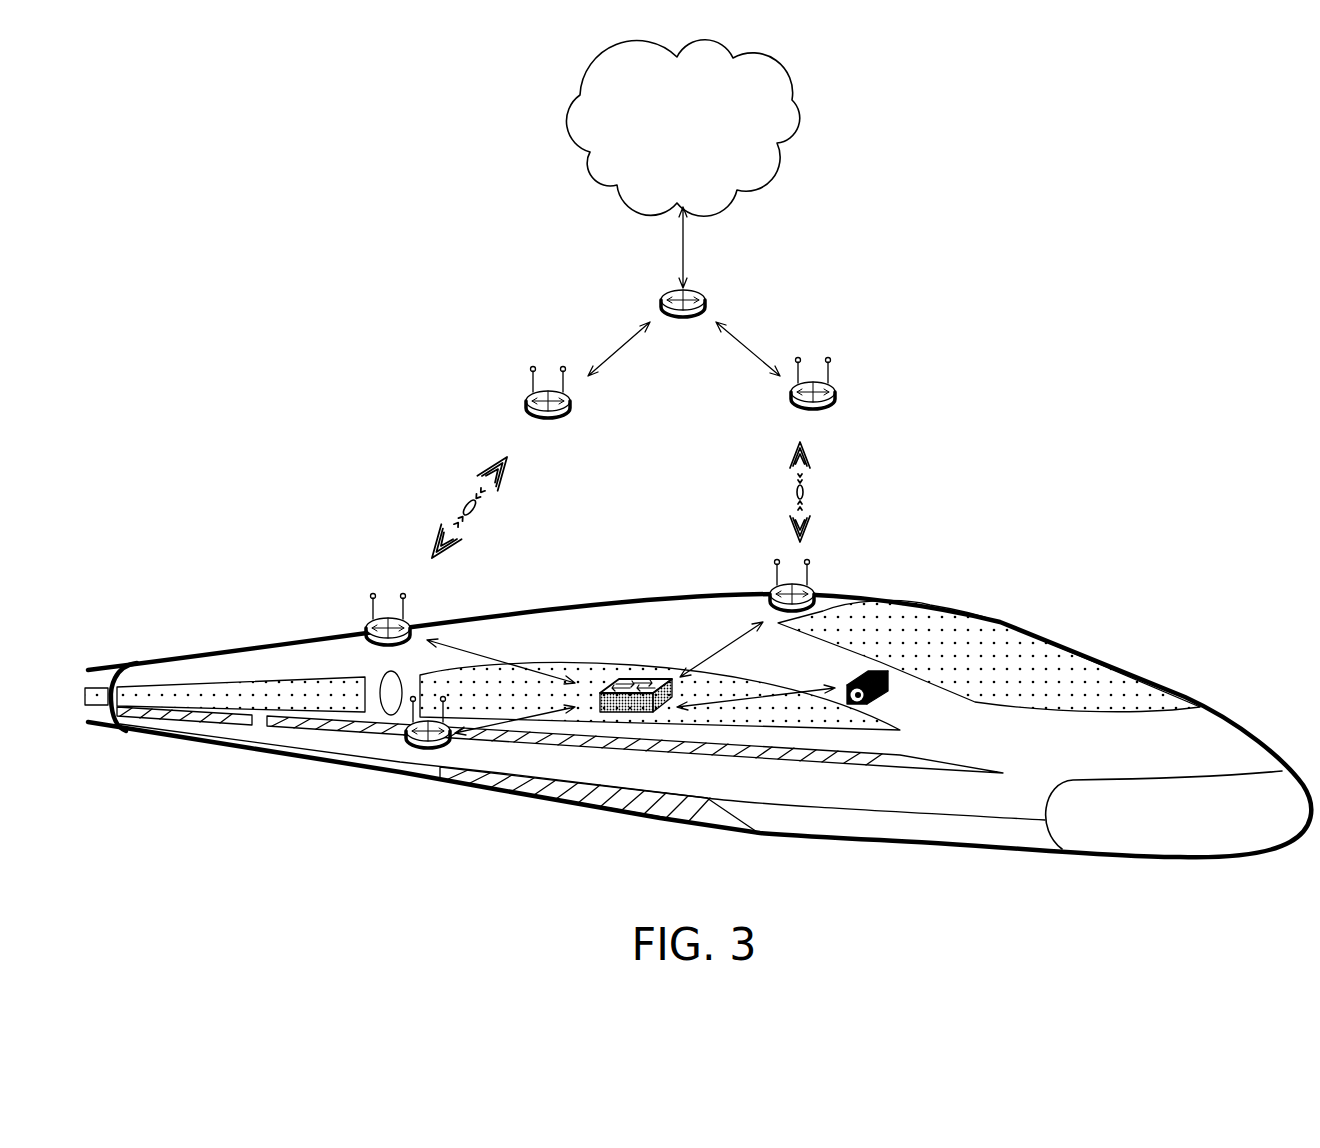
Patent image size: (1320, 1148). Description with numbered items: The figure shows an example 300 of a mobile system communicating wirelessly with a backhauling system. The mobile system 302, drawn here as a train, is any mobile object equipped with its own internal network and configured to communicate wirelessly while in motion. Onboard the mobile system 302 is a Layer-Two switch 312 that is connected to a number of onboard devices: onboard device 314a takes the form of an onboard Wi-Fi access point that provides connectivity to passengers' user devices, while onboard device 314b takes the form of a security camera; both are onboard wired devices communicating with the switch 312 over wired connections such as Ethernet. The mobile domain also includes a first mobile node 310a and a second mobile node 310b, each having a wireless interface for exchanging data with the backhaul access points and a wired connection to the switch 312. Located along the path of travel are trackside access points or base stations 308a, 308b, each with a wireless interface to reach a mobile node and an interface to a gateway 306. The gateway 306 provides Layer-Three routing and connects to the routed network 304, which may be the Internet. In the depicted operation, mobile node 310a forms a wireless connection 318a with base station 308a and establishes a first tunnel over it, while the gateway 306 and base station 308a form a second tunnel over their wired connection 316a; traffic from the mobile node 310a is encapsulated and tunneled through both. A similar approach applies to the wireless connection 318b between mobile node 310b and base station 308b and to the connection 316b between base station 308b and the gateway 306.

The example of a mobile system communicating wirelessly 300 is at (1241, 108).
The mobile system 302 is at (1024, 626).
The L3-routed network 304 is at (667, 164).
The gateway 306 is at (706, 294).
The trackside access point/base station 308a is at (836, 390).
The trackside access point/base station 308b is at (526, 398).
The first mobile node 310a is at (812, 595).
The second mobile node 310b is at (370, 622).
The Layer-2 switch 312 is at (640, 676).
The onboard device 314a is at (428, 747).
The onboard device 314b is at (878, 702).
The connection 316a is at (732, 307).
The connection 316b is at (632, 306).
The wireless connection 318a is at (835, 437).
The wireless connection 318b is at (478, 435).